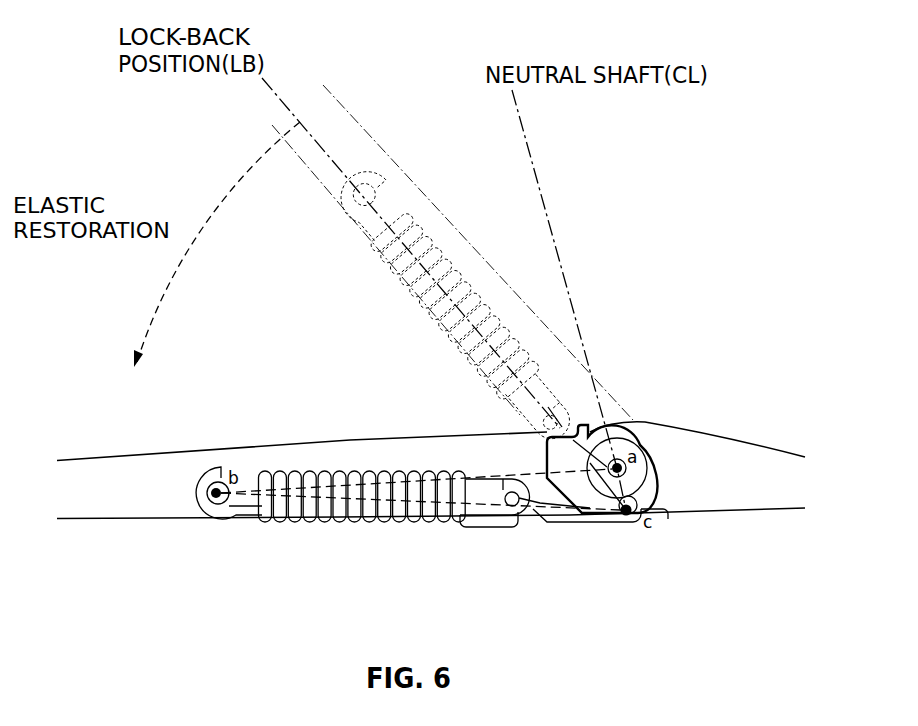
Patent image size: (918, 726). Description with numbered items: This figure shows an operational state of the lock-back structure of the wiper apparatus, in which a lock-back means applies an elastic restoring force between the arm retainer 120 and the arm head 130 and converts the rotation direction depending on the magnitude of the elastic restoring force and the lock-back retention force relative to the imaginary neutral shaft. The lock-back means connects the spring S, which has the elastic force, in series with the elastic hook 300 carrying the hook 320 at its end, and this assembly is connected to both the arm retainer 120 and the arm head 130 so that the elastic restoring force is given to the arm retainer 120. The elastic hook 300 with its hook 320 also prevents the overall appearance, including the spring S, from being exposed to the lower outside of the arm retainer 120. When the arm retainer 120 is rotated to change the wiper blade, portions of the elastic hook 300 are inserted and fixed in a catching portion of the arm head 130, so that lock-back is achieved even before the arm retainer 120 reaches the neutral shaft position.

The arm retainer 120 is at (127, 461).
The arm head 130 is at (706, 451).
The elastic hook 300 is at (572, 523).
The hook 320 is at (667, 508).
The spring S is at (278, 512).